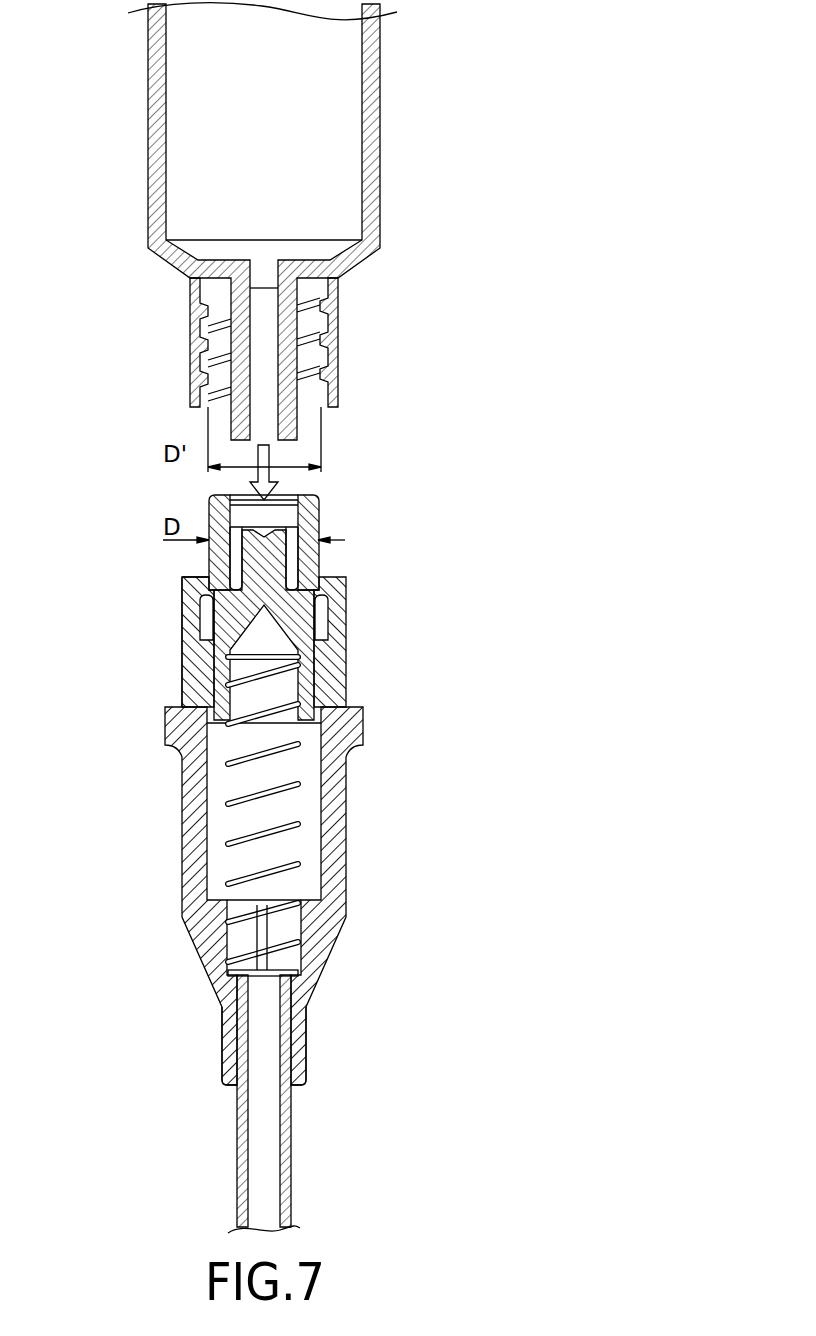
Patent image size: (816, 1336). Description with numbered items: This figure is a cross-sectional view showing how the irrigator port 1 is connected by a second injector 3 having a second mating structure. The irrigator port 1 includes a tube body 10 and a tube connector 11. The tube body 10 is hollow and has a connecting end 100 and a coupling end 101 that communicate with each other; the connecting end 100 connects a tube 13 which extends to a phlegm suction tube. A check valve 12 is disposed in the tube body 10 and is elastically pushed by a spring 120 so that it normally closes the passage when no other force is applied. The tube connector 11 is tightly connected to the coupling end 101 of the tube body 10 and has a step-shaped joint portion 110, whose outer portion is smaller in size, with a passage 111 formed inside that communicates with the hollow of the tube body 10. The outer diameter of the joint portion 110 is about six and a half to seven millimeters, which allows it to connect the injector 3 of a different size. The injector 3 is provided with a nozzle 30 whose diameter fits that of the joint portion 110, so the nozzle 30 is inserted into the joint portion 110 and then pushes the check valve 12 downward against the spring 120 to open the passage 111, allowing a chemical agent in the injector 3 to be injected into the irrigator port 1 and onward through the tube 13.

The irrigator port 1 is at (422, 760).
The injector 3 is at (378, 98).
The nozzle 30 is at (337, 358).
The tube body 10 is at (345, 820).
The connecting end 100 is at (306, 1040).
The coupling end 101 is at (182, 650).
The tube connector 11 is at (345, 662).
The joint portion 110 is at (209, 514).
The passage 111 is at (282, 515).
The check valve 12 is at (345, 620).
The spring 120 is at (228, 845).
The tube 13 is at (240, 1147).